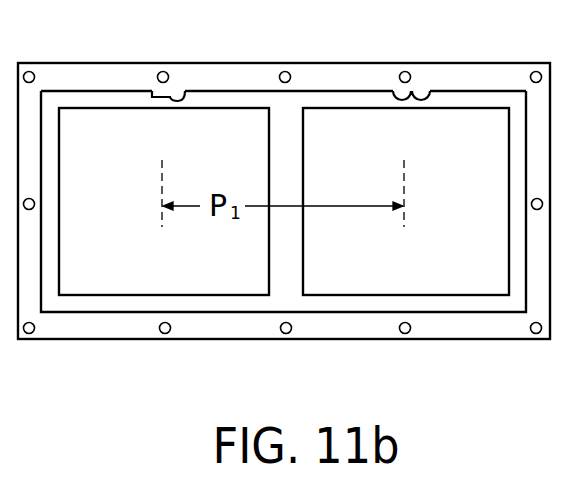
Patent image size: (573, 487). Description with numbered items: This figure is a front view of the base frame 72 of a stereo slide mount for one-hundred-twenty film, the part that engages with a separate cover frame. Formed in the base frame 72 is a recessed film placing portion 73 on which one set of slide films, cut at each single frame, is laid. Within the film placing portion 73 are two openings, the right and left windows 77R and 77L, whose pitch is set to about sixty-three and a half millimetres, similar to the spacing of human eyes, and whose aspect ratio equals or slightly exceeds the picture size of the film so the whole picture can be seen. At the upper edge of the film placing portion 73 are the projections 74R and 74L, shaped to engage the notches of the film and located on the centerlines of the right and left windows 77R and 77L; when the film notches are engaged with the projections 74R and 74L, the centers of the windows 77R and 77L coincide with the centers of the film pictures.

The base frame 72 is at (49, 62).
The film placing portion 73 is at (243, 303).
The left projection 74L is at (184, 96).
The right projection 74R is at (425, 100).
The left window 77L is at (175, 295).
The right window 77R is at (328, 296).